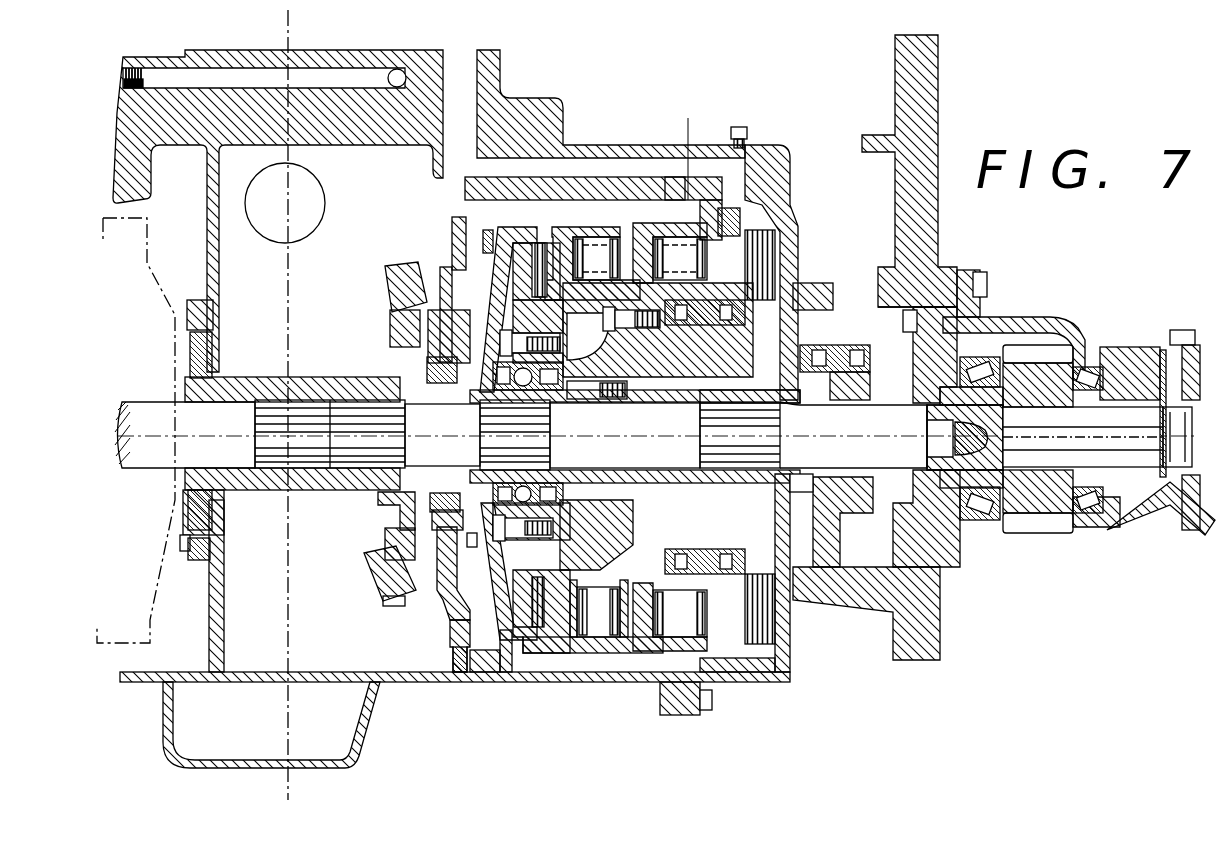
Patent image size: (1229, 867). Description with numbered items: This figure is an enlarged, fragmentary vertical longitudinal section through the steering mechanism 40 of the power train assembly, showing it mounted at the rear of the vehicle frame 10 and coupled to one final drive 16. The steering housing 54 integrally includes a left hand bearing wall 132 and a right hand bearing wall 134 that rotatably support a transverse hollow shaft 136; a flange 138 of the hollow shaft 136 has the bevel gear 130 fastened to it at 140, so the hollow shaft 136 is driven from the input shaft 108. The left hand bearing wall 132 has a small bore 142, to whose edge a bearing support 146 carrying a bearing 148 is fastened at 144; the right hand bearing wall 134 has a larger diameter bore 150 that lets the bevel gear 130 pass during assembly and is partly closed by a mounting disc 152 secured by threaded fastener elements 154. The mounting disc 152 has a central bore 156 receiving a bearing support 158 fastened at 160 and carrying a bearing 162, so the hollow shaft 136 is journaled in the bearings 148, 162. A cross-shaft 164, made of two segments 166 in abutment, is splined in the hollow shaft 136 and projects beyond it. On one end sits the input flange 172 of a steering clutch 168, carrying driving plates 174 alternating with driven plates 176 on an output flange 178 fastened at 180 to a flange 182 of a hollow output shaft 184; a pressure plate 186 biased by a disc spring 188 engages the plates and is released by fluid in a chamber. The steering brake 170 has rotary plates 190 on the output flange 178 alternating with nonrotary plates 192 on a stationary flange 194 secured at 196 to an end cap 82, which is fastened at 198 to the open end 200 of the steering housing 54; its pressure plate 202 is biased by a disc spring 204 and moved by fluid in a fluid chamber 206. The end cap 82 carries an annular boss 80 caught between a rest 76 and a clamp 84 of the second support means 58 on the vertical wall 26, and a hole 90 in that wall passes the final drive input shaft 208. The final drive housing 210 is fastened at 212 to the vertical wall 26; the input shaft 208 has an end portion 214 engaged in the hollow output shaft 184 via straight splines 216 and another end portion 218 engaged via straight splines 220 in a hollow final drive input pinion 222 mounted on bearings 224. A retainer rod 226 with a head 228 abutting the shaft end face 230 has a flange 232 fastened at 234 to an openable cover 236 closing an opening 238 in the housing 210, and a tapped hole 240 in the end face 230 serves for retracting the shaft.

The frame 10 is at (926, 171).
The final drive 16 is at (1150, 330).
The vertical wall 26 is at (935, 98).
The steering mechanism 40 is at (572, 94).
The steering housing 54 is at (572, 150).
The second support means 58 is at (810, 606).
The rest 76 is at (853, 600).
The boss 80 is at (832, 524).
The end cap 82 is at (752, 146).
The clamp 84 is at (812, 283).
The hole 90 is at (883, 310).
The input shaft 108 is at (328, 200).
The bevel gear 130 is at (378, 575).
The left hand bearing wall 132 is at (222, 615).
The right hand bearing wall 134 is at (455, 682).
The hollow shaft 136 is at (280, 492).
The flange 138 is at (394, 526).
The fastening 140 is at (390, 305).
The bore 142 is at (224, 528).
The fastening 144 is at (180, 542).
The bearing support 146 is at (196, 560).
The bearing 148 is at (185, 496).
The larger diameter bore 150 is at (448, 625).
The mounting disc 152 is at (450, 560).
The threaded fastener elements 154 is at (496, 665).
The bore 156 is at (410, 520).
The bearing support 158 is at (385, 600).
The fastening 160 is at (482, 470).
The bearing 162 is at (440, 466).
The cross-shaft 164 is at (236, 400).
The segments 166 is at (346, 402).
The steering clutch 168 is at (560, 215).
The steering brake 170 is at (672, 205).
The input flange 172 is at (468, 285).
The driving plates 174 is at (583, 247).
The driven plates 176 is at (595, 259).
The output flange 178 is at (640, 247).
The fastening 180 is at (606, 320).
The flange 182 is at (635, 345).
The hollow output shaft 184 is at (640, 396).
The pressure plate 186 is at (545, 280).
The disc spring 188 is at (488, 262).
The rotary plates 190 is at (680, 258).
The nonrotary plates 192 is at (724, 232).
The stationary flange 194 is at (708, 205).
The fastening 196 is at (625, 655).
The fastening 198 is at (712, 700).
The open end 200 is at (697, 146).
The pressure plate 202 is at (765, 230).
The disc spring 204 is at (762, 262).
The fluid chamber 206 is at (730, 328).
The final drive input shaft 208 is at (848, 425).
The final drive housing 210 is at (1080, 336).
The fastening 212 is at (985, 292).
The end portion 214 is at (772, 422).
The straight splines 216 is at (700, 402).
The end portion 218 is at (930, 432).
The straight splines 220 is at (940, 410).
The final drive input pinion 222 is at (1045, 345).
The bearings 224 is at (980, 352).
The retainer rod 226 is at (1115, 440).
The head 228 is at (1005, 458).
The end face 230 is at (1008, 415).
The flange 232 is at (1168, 432).
The fastening 234 is at (1185, 505).
The openable cover 236 is at (1196, 415).
The opening 238 is at (1164, 380).
The tapped hole 240 is at (945, 450).